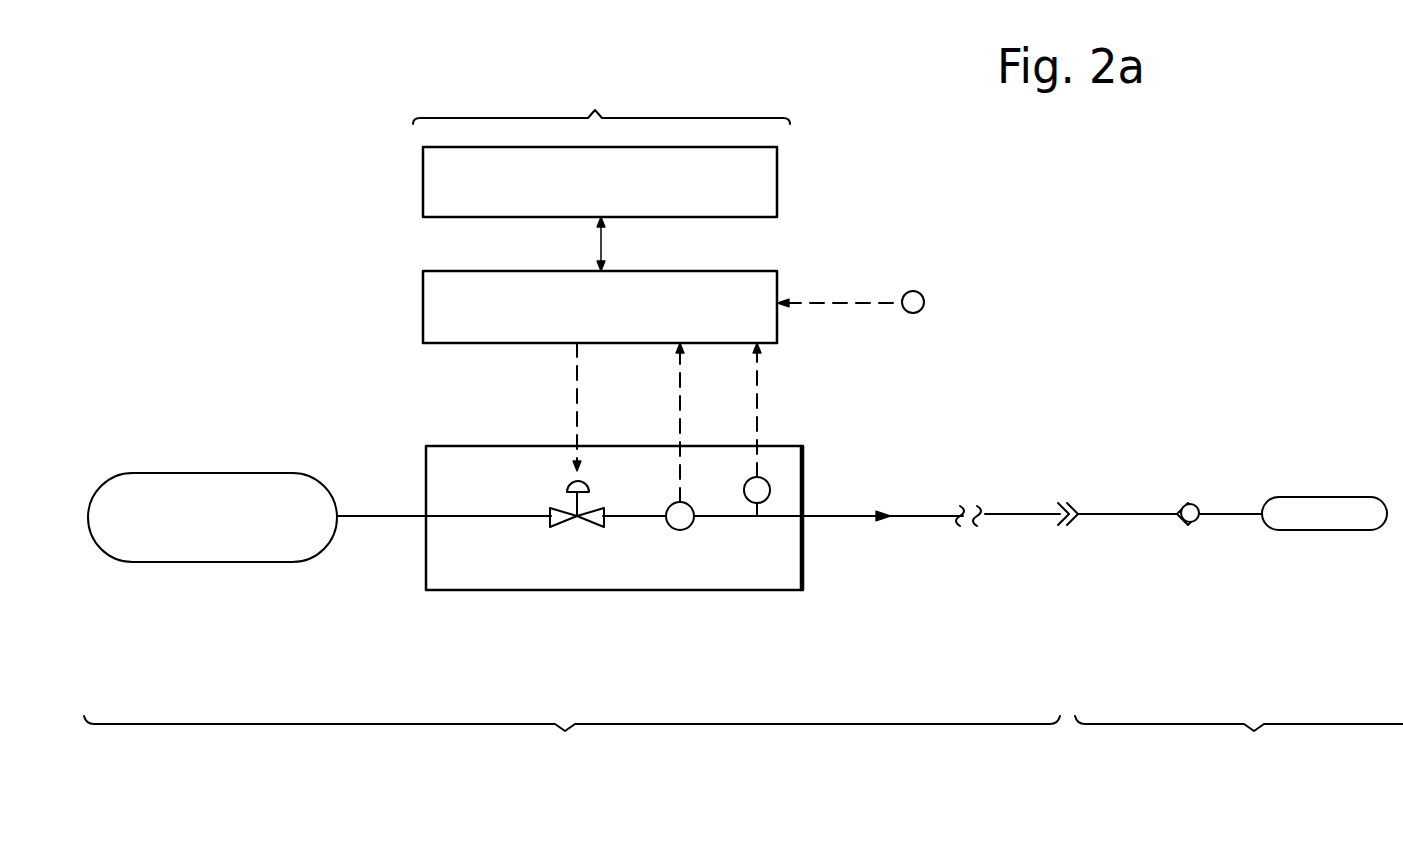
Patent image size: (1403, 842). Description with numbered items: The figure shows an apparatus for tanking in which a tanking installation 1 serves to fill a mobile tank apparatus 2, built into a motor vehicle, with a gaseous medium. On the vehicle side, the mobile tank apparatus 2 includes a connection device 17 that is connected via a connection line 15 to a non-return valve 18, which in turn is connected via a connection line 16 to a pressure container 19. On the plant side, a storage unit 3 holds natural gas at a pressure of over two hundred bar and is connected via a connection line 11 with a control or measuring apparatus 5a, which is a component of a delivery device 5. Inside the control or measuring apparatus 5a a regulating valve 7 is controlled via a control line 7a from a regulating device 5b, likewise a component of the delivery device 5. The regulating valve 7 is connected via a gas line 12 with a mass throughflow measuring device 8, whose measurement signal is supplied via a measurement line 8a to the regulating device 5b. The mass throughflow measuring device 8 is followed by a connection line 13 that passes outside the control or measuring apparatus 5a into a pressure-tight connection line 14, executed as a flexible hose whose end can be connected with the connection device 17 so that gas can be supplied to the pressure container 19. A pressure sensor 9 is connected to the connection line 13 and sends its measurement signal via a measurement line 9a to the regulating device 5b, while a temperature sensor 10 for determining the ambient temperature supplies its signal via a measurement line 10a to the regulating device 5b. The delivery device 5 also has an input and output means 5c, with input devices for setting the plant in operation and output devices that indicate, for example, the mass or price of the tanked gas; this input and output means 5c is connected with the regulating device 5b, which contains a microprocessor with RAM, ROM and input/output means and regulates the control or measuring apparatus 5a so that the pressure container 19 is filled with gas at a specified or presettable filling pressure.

The tanking installation 1 is at (572, 746).
The mobile tank apparatus 2 is at (1239, 746).
The storage unit 3 is at (225, 539).
The delivery device 5 is at (608, 372).
The control or measuring apparatus 5a is at (602, 590).
The regulating device 5b is at (580, 325).
The input and output means 5c is at (572, 199).
The regulating valve 7 is at (557, 527).
The control line 7a is at (578, 381).
The mass throughflow measuring device 8 is at (682, 530).
The measurement line 8a is at (681, 383).
The pressure sensor 9 is at (760, 488).
The measurement line 9a is at (758, 386).
The temperature sensor 10 is at (915, 313).
The measurement line 10a is at (850, 305).
The connection line 11 is at (378, 516).
The gas line 12 is at (626, 516).
The connection line 13 is at (709, 516).
The pressure-tight connection line 14 is at (923, 515).
The connection line 15 is at (1124, 514).
The connection line 16 is at (1234, 514).
The connection device 17 is at (1066, 528).
The non-return valve 18 is at (1190, 524).
The pressure container 19 is at (1340, 518).